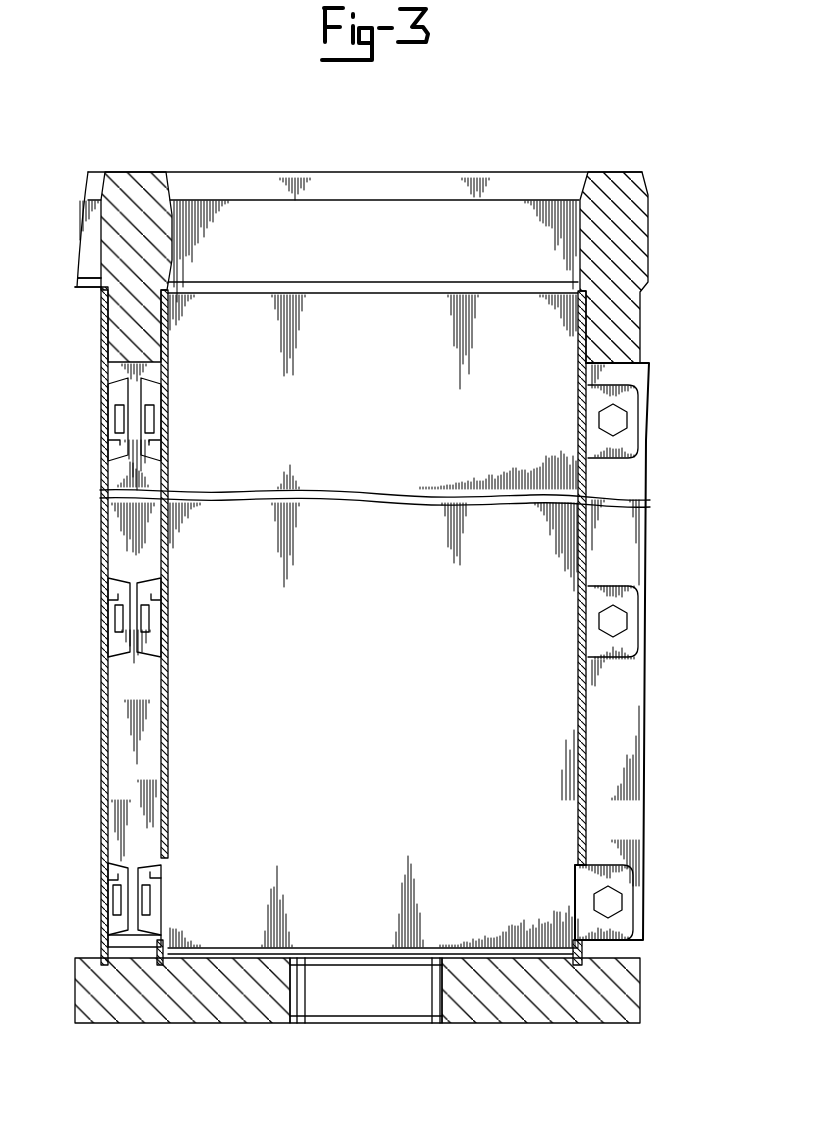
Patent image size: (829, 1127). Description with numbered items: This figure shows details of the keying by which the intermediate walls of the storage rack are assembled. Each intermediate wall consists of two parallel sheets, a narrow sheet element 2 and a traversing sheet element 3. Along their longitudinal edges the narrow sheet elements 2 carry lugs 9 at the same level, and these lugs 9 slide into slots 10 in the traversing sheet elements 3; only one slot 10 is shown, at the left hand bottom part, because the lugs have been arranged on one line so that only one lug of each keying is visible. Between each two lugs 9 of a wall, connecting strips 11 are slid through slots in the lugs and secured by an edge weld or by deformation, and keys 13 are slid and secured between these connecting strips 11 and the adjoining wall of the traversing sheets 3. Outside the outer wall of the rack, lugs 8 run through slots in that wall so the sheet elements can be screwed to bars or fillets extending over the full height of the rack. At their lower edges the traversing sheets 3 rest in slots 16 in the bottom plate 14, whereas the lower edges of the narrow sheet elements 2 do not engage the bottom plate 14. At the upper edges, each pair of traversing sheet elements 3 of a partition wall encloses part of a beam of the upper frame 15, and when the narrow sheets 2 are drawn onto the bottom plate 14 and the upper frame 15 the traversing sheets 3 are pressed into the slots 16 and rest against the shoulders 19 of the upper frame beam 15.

The narrow sheet element 2 is at (370, 960).
The traversing sheet element 3 is at (104, 548).
The lug 8 is at (630, 448).
The lug 9 is at (110, 455).
The slot 10 is at (108, 908).
The connecting strip 11 is at (115, 417).
The key 13 is at (118, 440).
The bottom plate 14 is at (262, 990).
The upper frame 15 is at (165, 232).
The slot 16 is at (160, 965).
The shoulder 19 is at (100, 292).